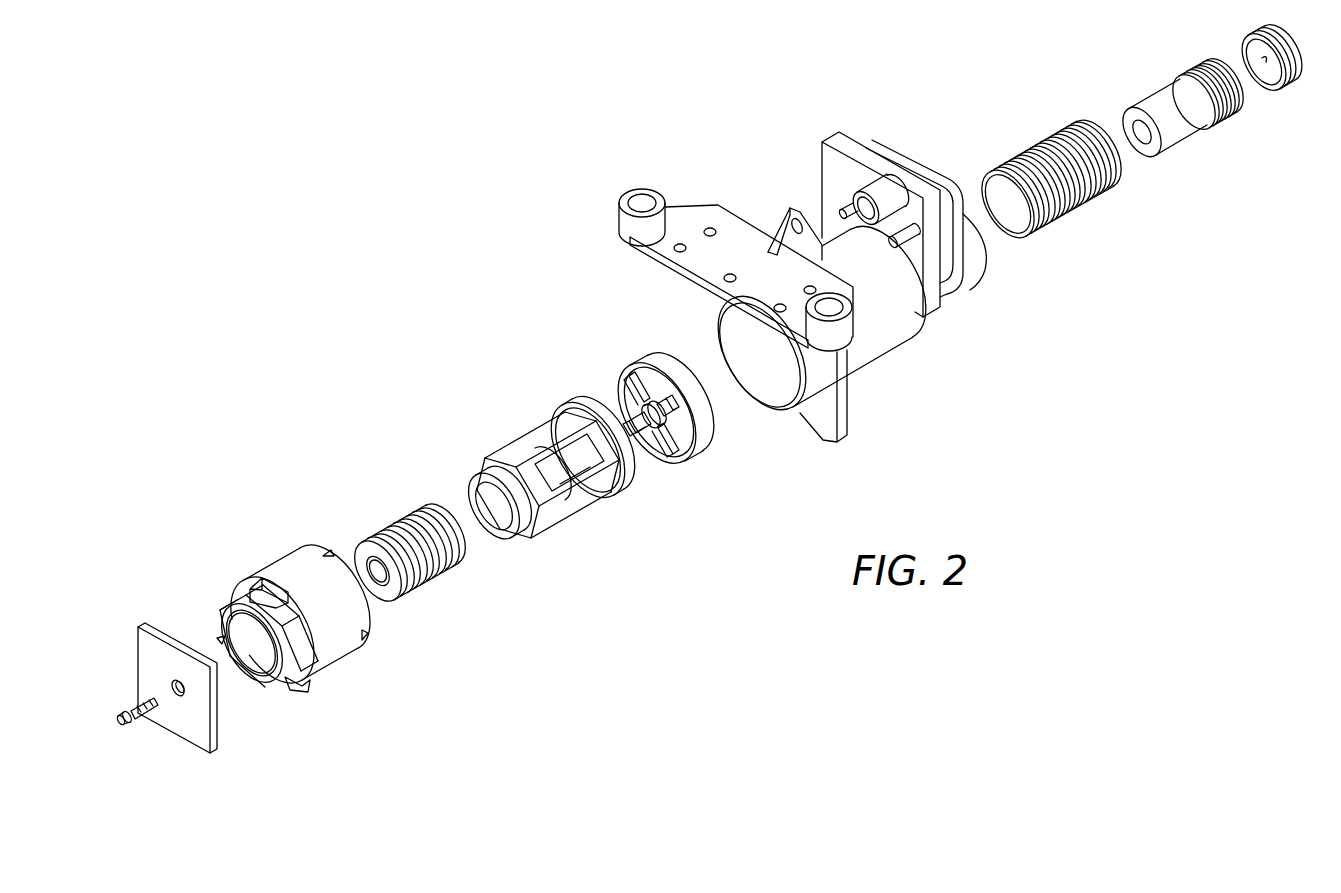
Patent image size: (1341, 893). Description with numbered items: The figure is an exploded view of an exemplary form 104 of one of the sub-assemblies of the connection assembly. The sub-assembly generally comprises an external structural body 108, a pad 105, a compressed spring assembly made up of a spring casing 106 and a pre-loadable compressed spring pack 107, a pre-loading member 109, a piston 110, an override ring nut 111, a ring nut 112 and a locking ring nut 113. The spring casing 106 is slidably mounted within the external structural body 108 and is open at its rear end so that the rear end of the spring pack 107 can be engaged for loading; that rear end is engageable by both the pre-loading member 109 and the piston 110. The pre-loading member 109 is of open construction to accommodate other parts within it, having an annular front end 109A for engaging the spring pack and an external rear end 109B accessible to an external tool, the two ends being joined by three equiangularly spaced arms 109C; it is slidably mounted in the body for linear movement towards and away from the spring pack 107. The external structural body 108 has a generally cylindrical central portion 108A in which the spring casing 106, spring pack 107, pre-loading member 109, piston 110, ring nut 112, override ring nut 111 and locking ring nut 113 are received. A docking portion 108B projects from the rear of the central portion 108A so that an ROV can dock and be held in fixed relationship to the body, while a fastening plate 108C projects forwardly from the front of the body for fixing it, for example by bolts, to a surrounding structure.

The exemplary form of sub-assembly 104 is at (522, 154).
The pad 105 is at (190, 727).
The spring casing 106 is at (338, 658).
The pre-loadable compressed spring pack 107 is at (436, 575).
The external structural body 108 is at (802, 278).
The central portion 108A is at (891, 344).
The docking portion 108B is at (902, 174).
The fastening plate 108C is at (737, 225).
The pre-loading member 109 is at (534, 458).
The annular front end 109A is at (480, 478).
The external rear end 109B is at (575, 400).
The equiangularly spaced arms 109C is at (577, 513).
The piston 110 is at (705, 447).
The override ring nut 111 is at (1089, 208).
The ring nut 112 is at (1185, 134).
The locking ring nut 113 is at (1286, 88).